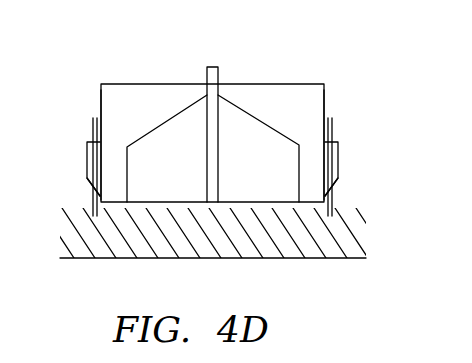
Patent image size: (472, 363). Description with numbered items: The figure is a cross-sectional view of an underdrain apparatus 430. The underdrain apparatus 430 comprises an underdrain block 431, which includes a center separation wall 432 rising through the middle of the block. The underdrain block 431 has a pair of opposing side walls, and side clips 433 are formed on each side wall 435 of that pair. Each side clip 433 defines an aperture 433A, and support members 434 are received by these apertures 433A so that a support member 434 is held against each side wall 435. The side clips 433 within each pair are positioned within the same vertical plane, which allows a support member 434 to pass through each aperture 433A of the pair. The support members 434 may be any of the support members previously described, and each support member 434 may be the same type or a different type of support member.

The underdrain apparatus 430 is at (339, 41).
The underdrain block 431 is at (237, 84).
The center separation wall 432 is at (206, 72).
The side clip 433 is at (88, 145).
The aperture 433A is at (88, 175).
The support member 434 is at (92, 130).
The side wall 435 is at (100, 97).